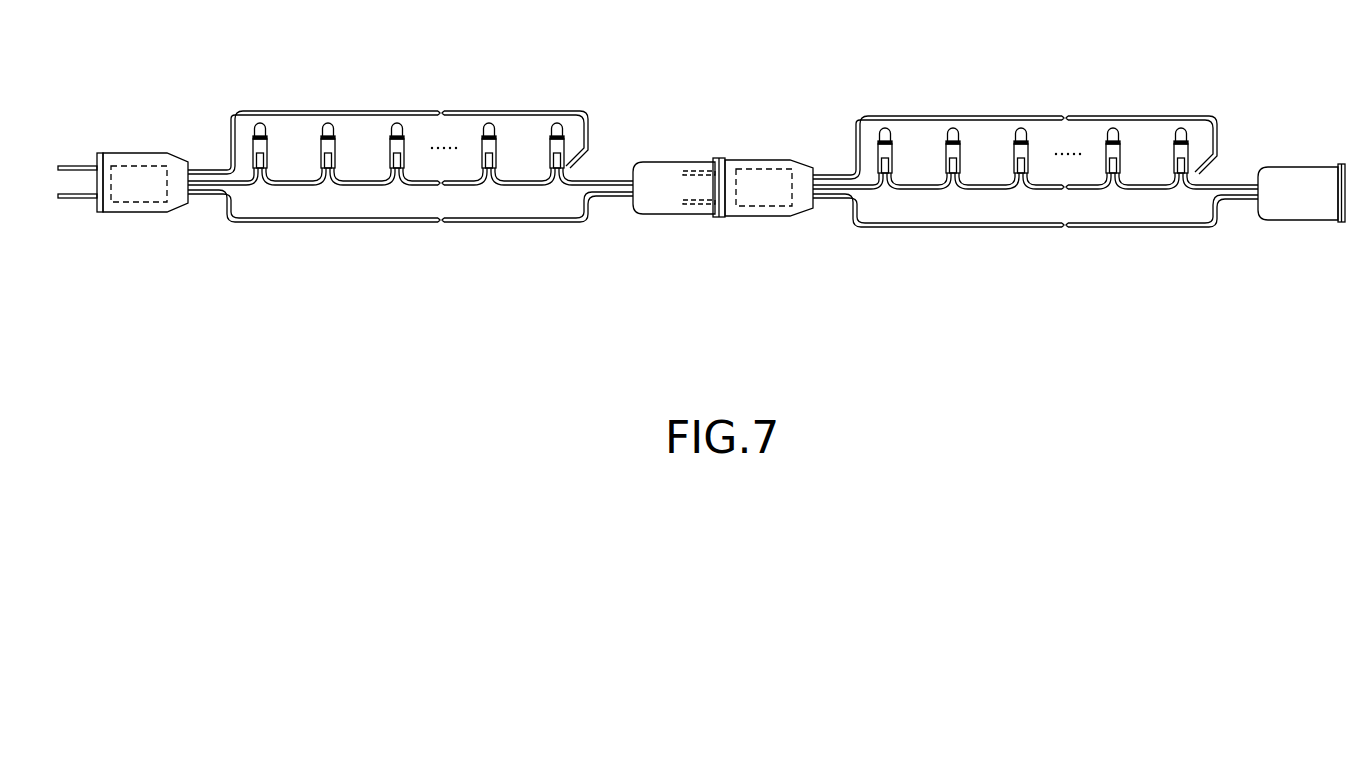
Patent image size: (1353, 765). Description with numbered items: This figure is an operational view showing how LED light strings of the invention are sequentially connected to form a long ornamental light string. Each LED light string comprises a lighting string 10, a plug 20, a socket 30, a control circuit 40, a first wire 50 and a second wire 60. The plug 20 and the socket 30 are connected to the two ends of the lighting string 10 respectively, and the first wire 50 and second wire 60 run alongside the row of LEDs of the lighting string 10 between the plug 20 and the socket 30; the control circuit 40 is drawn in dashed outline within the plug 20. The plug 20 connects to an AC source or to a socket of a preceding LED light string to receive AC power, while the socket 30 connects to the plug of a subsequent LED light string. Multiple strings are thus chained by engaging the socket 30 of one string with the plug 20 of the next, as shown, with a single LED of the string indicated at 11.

The lighting string 10 is at (346, 140).
The lamp 11 is at (265, 147).
The plug 20 is at (134, 153).
The socket 30 is at (671, 162).
The control circuit 40 is at (143, 190).
The first wire 50 is at (280, 222).
The second wire 60 is at (300, 111).